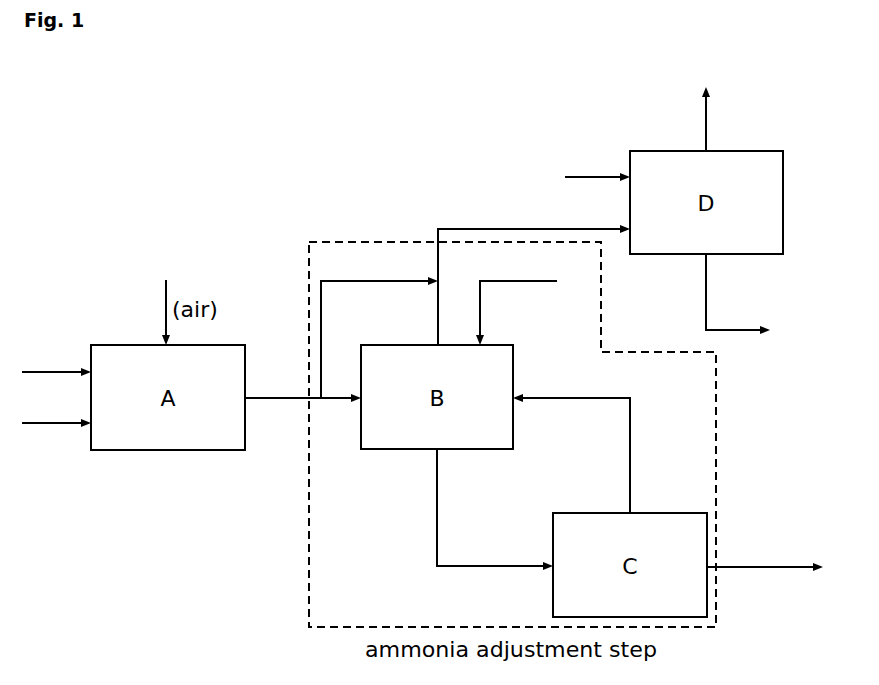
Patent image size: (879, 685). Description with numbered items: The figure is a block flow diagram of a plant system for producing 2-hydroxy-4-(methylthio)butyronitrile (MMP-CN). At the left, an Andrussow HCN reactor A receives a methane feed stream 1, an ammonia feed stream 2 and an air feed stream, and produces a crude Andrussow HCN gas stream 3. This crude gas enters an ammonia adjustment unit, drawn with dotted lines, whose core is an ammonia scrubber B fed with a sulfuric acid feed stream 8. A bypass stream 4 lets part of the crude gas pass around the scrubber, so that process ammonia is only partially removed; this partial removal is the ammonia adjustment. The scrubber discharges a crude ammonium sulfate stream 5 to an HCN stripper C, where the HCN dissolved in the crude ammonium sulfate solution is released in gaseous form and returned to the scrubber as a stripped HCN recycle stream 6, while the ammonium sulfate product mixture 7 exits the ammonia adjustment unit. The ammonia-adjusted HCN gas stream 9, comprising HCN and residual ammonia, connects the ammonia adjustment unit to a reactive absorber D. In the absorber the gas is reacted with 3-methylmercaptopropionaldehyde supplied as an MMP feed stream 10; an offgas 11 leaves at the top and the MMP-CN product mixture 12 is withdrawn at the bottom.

The methane feed stream 1 is at (56, 360).
The ammonia feed stream 2 is at (56, 412).
The crude Andrussow HCN gas stream 3 is at (303, 384).
The bypass stream 4 is at (379, 324).
The crude ammonium sulfate stream 5 is at (495, 509).
The stripped HCN recycle stream 6 is at (571, 440).
The ammonium sulfate product mixture 7 is at (765, 553).
The sulfuric acid feed stream 8 is at (516, 298).
The ammonia-adjusted HCN gas stream 9 is at (534, 272).
The MMP feed stream 10 is at (597, 166).
The offgas 11 is at (728, 119).
The MMP-CN product mixture 12 is at (738, 294).